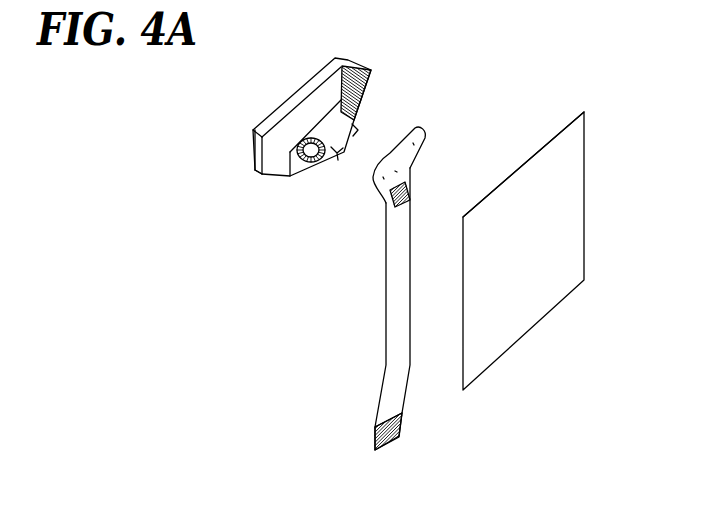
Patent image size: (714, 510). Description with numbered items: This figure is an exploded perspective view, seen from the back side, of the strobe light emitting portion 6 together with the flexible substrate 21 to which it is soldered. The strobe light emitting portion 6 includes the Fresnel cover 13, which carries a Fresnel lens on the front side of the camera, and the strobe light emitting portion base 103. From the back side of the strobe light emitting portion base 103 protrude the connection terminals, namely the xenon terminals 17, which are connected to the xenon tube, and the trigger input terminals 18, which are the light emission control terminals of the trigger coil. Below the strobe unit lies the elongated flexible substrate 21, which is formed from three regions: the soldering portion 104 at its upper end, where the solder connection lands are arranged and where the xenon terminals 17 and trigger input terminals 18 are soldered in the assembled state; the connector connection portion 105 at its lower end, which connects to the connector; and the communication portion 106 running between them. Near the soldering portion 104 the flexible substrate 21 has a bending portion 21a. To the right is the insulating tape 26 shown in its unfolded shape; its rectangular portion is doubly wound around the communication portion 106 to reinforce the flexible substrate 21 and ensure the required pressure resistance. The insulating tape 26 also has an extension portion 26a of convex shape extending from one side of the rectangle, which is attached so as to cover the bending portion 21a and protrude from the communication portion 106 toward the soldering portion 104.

The strobe light emitting portion 6 is at (321, 93).
The Fresnel cover 13 is at (343, 61).
The strobe light emitting portion base 103 is at (347, 113).
The xenon terminals 17 is at (327, 163).
The trigger input terminals 18 is at (337, 154).
The flexible substrate 21 is at (425, 136).
The bending portion 21a is at (388, 212).
The soldering portion 104 is at (408, 168).
The connector connection portion 105 is at (387, 440).
The communication portion 106 is at (398, 272).
The insulating tape 26 is at (528, 330).
The extension portion 26a is at (480, 199).